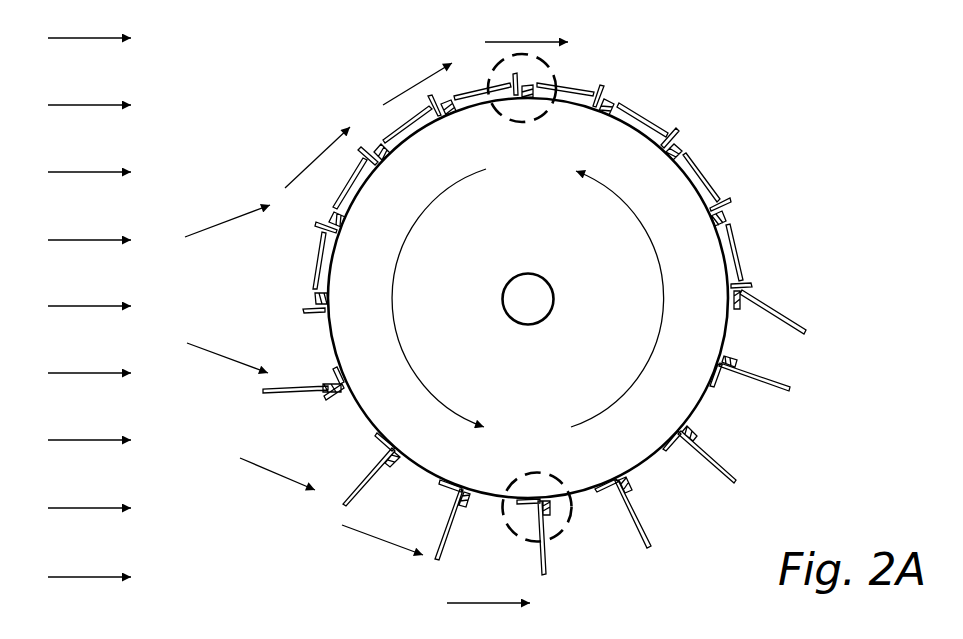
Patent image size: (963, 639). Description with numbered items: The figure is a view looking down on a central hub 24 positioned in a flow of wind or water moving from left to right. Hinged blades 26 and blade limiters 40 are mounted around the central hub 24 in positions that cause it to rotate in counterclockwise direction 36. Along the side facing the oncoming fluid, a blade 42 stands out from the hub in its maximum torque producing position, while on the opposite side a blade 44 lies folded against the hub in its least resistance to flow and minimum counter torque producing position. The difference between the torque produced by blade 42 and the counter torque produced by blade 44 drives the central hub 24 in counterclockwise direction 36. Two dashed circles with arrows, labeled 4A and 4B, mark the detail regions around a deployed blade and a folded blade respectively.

The central hub 24 is at (330, 342).
The blades 26 is at (640, 530).
The counterclockwise direction 36 is at (665, 283).
The blade limiters 40 is at (372, 156).
The blade 42 is at (535, 572).
The blade 44 is at (643, 118).
The section view 4A indicator 4A is at (560, 535).
The section view 4B indicator 4B is at (553, 72).